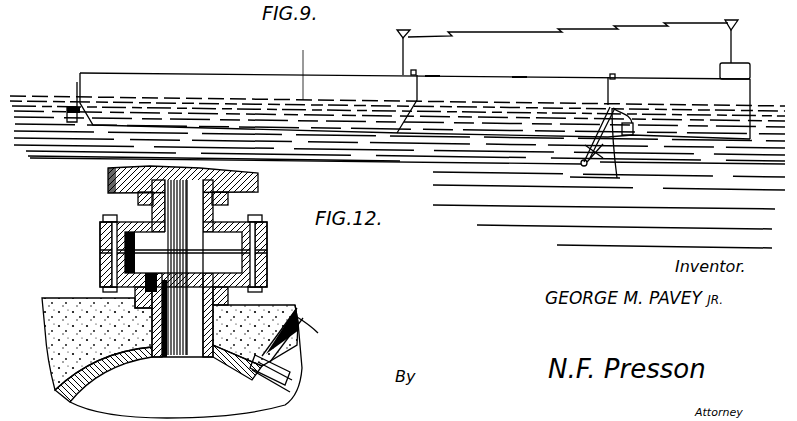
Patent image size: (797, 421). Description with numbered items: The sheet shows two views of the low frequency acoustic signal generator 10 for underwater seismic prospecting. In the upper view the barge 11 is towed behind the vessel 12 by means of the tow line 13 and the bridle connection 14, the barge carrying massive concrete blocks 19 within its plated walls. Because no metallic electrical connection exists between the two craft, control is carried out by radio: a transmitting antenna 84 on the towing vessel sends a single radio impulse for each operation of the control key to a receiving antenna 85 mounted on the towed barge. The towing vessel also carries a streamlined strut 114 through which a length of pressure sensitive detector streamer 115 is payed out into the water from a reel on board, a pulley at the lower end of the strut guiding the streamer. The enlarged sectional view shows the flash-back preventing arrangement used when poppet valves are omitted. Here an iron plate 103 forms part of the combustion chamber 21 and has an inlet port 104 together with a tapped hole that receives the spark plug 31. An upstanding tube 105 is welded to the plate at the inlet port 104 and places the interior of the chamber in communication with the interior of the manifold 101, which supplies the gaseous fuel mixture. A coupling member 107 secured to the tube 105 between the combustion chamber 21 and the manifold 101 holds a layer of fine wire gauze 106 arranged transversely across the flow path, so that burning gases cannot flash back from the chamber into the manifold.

In FIG. 9, the low frequency acoustic signal generator 10 is at (106, 62).
In FIG. 9, the barge 11 is at (289, 95).
In FIG. 9, the vessel 12 is at (675, 100).
In FIG. 9, the tow line 13 is at (519, 77).
In FIG. 9, the bridle connection 14 is at (432, 76).
In FIG. 9, the transmitting antenna 84 is at (733, 33).
In FIG. 9, the receiving antenna 85 is at (403, 42).
In FIG. 9, the streamlined strut 114 is at (617, 178).
In FIG. 9, the pressure sensitive detector streamer 115 is at (520, 165).
In FIG. 12, the concrete blocks 19 is at (63, 358).
In FIG. 12, the combustion chamber 21 is at (220, 407).
In FIG. 12, the spark plug 31 is at (300, 358).
In FIG. 12, the manifold 101 is at (108, 170).
In FIG. 12, the iron plate 103 is at (85, 390).
In FIG. 12, the inlet port 104 is at (187, 348).
In FIG. 12, the upstanding tube 105 is at (153, 358).
In FIG. 12, the wire gauze 106 is at (235, 257).
In FIG. 12, the coupling member 107 is at (266, 236).